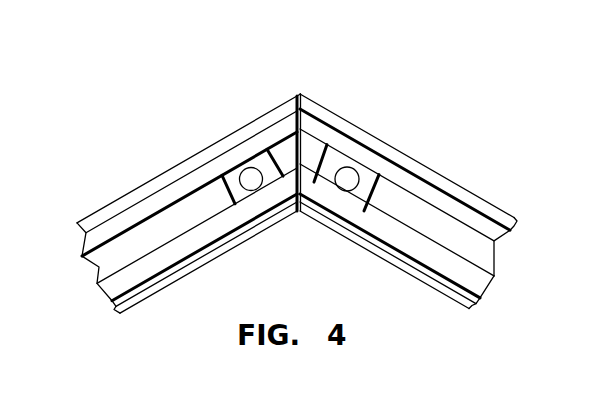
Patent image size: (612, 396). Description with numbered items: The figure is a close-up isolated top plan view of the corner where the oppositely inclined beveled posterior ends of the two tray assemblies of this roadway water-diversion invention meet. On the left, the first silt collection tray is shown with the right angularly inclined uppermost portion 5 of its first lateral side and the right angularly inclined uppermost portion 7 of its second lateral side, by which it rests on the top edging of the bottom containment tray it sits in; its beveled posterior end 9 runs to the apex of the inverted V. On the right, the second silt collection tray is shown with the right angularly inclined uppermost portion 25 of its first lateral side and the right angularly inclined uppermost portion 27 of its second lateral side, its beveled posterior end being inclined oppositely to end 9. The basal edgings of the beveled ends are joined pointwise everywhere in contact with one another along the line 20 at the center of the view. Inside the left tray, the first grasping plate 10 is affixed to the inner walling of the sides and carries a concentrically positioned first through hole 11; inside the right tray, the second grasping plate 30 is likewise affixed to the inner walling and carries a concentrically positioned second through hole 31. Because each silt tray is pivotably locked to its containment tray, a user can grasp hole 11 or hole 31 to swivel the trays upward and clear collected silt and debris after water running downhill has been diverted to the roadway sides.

The right angularly inclined uppermost portion 5 is at (187, 196).
The right angularly inclined uppermost portion 7 is at (138, 208).
The beveled posterior end 9 is at (282, 127).
The first grasping plate 10 is at (225, 182).
The first through hole 11 is at (249, 178).
The line 20 is at (298, 95).
The right angularly inclined uppermost portion 25 is at (408, 201).
The right angularly inclined uppermost portion 27 is at (408, 262).
The second grasping plate 30 is at (333, 160).
The second through hole 31 is at (345, 178).